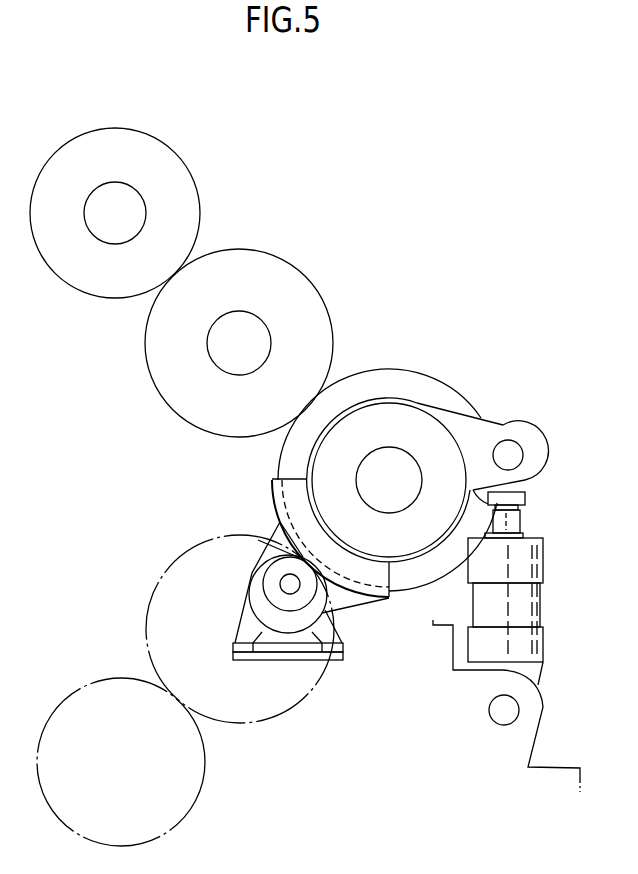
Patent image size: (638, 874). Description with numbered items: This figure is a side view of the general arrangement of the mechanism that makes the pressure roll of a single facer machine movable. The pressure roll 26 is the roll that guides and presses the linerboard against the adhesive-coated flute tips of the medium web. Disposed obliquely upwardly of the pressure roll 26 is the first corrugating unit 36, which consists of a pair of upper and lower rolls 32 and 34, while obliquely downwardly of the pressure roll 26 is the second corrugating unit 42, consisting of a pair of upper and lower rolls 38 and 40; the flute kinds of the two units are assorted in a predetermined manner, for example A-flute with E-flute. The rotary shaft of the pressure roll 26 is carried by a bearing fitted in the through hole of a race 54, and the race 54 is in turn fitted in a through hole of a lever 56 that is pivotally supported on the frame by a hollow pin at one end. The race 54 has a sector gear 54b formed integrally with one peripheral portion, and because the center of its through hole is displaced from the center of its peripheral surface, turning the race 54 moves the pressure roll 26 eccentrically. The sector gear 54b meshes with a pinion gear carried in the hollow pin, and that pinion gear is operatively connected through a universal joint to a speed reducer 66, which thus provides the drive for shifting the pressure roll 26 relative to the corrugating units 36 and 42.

The pressure roll 26 is at (404, 378).
The upper roll 32 is at (170, 162).
The lower roll 34 is at (268, 263).
The first corrugating unit 36 is at (262, 118).
The upper roll 38 is at (198, 798).
The lower roll 40 is at (307, 702).
The second corrugating unit 42 is at (355, 770).
The race 54 is at (430, 410).
The sector gear 54b is at (290, 498).
The lever 56 is at (512, 432).
The speed reducer 66 is at (272, 592).